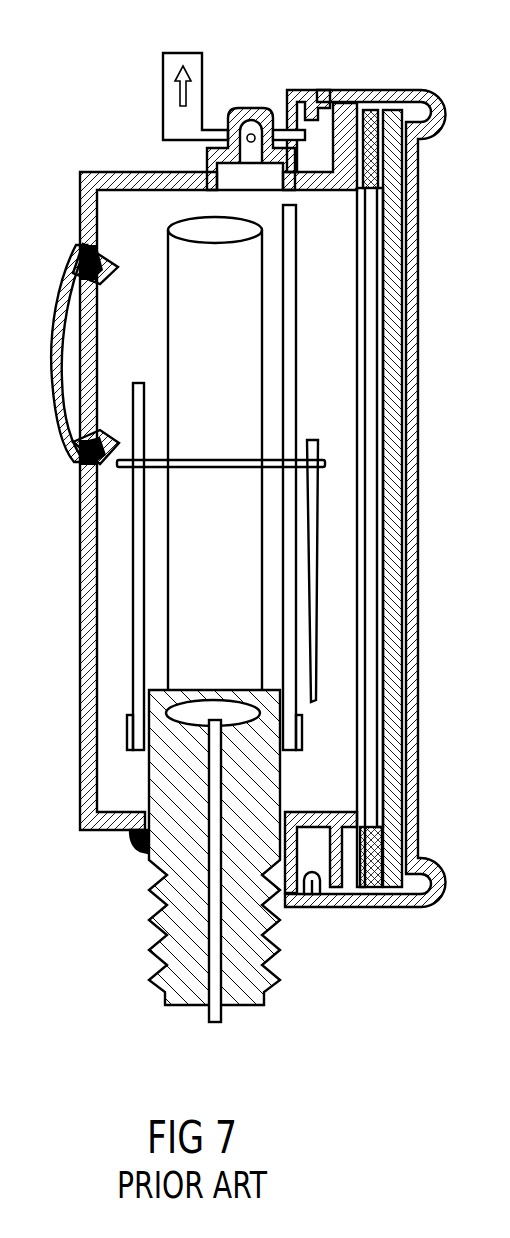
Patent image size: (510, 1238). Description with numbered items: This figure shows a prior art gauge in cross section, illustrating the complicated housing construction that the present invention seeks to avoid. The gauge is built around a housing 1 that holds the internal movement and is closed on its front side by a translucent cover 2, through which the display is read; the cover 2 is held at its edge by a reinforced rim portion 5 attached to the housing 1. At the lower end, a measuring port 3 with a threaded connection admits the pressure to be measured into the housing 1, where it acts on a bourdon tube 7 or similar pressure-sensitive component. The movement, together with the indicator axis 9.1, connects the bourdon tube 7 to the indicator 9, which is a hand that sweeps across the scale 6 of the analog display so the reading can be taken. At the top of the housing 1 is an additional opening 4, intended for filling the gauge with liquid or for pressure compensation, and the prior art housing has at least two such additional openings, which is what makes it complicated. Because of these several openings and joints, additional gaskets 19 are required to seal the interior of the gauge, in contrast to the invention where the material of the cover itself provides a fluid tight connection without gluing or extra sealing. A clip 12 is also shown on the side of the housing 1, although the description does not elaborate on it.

The housing 1 is at (88, 606).
The cover 2 is at (391, 397).
The measuring port 3 is at (184, 1036).
The additional opening 4 is at (253, 108).
The rim portion 5 is at (387, 107).
The scale 6 is at (290, 333).
The bourdon tube 7 is at (245, 262).
The indicator 9 is at (312, 566).
The indicator axis 9.1 is at (205, 467).
The clip 12 is at (58, 287).
The gasket 19 is at (378, 163).